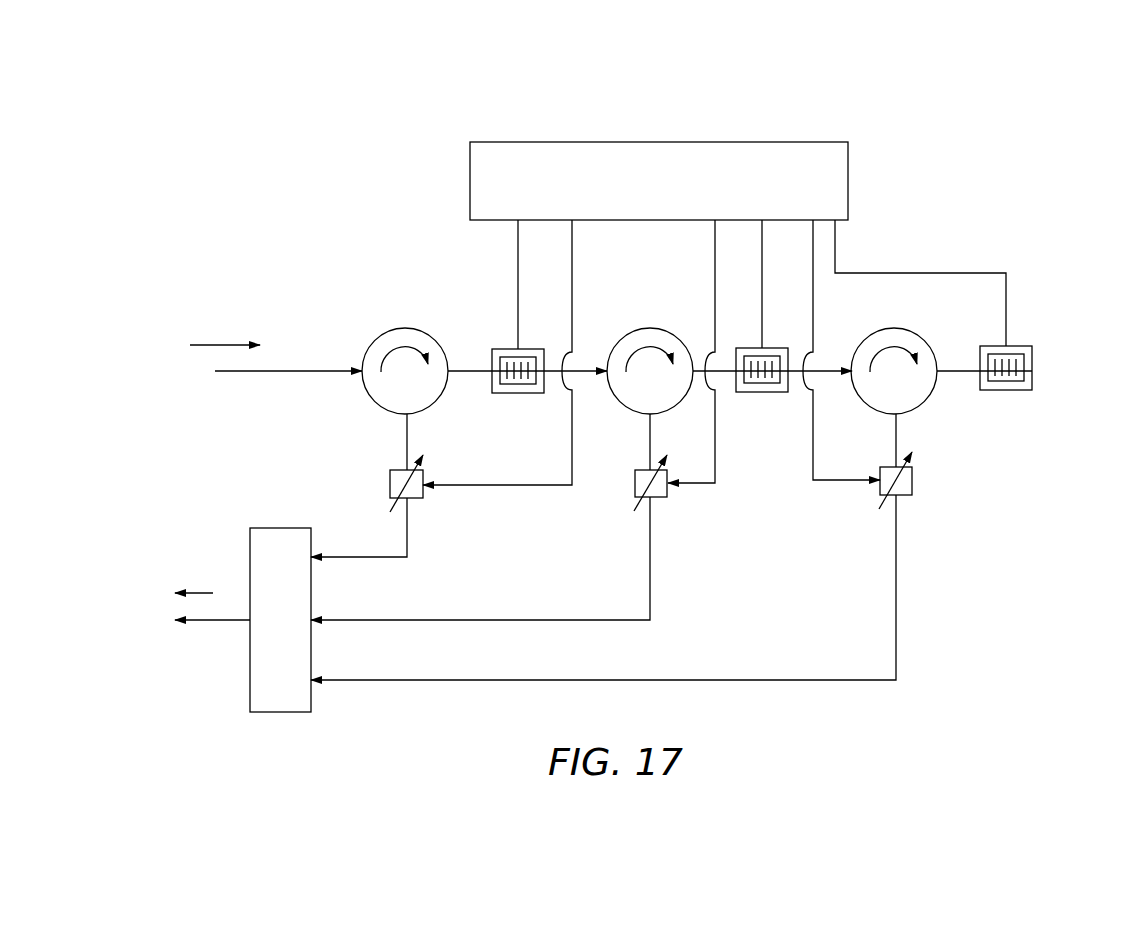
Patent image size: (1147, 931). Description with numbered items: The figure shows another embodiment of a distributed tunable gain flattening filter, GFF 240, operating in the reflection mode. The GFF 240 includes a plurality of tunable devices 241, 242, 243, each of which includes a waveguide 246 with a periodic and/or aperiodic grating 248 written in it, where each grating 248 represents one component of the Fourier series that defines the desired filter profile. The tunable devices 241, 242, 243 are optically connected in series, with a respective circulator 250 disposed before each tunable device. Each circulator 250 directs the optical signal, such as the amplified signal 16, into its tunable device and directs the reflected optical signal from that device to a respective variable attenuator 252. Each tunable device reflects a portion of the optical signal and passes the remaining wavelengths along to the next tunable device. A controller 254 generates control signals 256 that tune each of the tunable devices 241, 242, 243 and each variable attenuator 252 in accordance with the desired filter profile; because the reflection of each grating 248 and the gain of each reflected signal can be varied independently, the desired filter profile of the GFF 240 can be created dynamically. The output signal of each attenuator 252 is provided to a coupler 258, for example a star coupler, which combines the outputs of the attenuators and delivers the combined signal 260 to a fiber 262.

The amplified signal 16 is at (215, 345).
The GFF 240 is at (777, 90).
The tunable device 241 is at (492, 350).
The tunable device 242 is at (745, 346).
The tunable device 243 is at (1022, 344).
The waveguide 246 is at (503, 393).
The grating 248 is at (530, 387).
The circulator 250 is at (380, 336).
The variable attenuator 252 is at (390, 480).
The controller 254 is at (848, 158).
The control signals 256 is at (572, 268).
The coupler 258 is at (262, 528).
The combined signal 260 is at (200, 592).
The fiber 262 is at (190, 625).